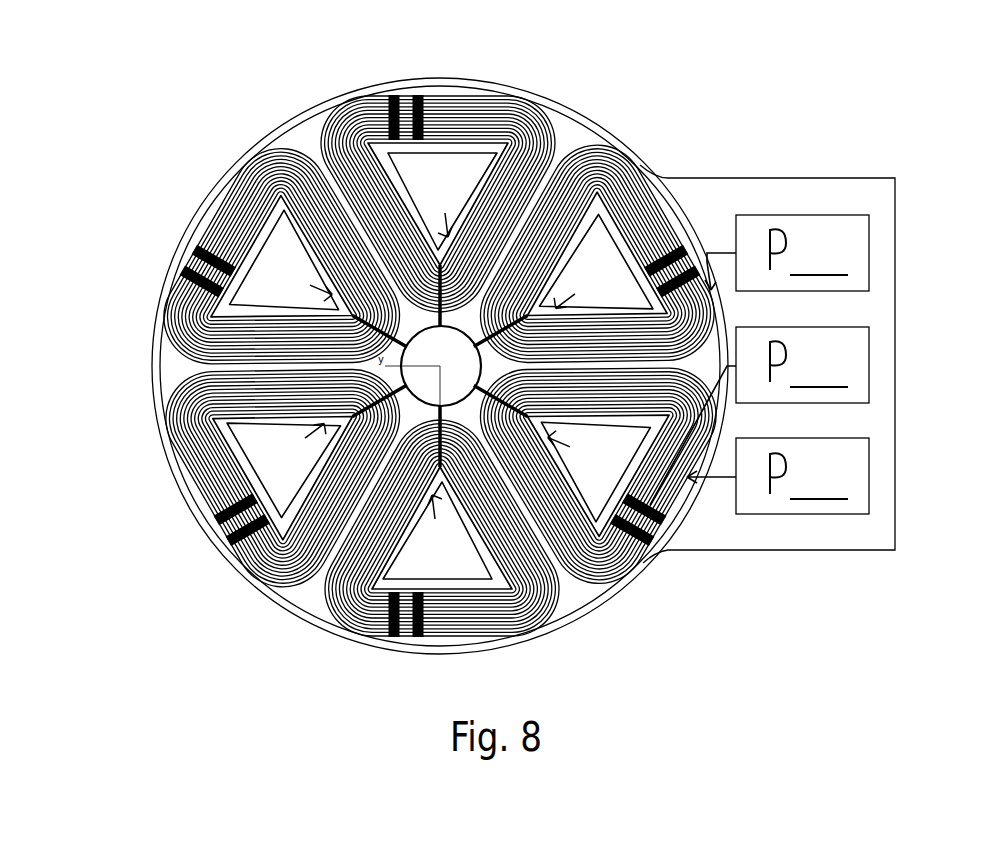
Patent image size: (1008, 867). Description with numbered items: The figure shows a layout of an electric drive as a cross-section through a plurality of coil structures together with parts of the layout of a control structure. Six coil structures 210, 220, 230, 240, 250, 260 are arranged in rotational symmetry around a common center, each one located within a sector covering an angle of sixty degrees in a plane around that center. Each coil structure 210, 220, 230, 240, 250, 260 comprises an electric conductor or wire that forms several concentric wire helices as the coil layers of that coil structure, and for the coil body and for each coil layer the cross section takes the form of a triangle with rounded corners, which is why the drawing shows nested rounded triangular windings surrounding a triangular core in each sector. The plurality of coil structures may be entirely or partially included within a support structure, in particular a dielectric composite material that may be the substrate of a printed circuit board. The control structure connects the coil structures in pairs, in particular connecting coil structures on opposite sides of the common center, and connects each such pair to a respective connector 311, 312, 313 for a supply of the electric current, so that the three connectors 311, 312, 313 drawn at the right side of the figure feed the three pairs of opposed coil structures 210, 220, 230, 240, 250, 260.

The coil structure 210 is at (465, 95).
The coil structure 220 is at (668, 205).
The coil structure 230 is at (603, 583).
The coil structure 240 is at (337, 637).
The coil structure 250 is at (248, 576).
The coil structure 260 is at (200, 228).
The connector 311 is at (787, 253).
The connector 312 is at (759, 416).
The connector 313 is at (778, 476).